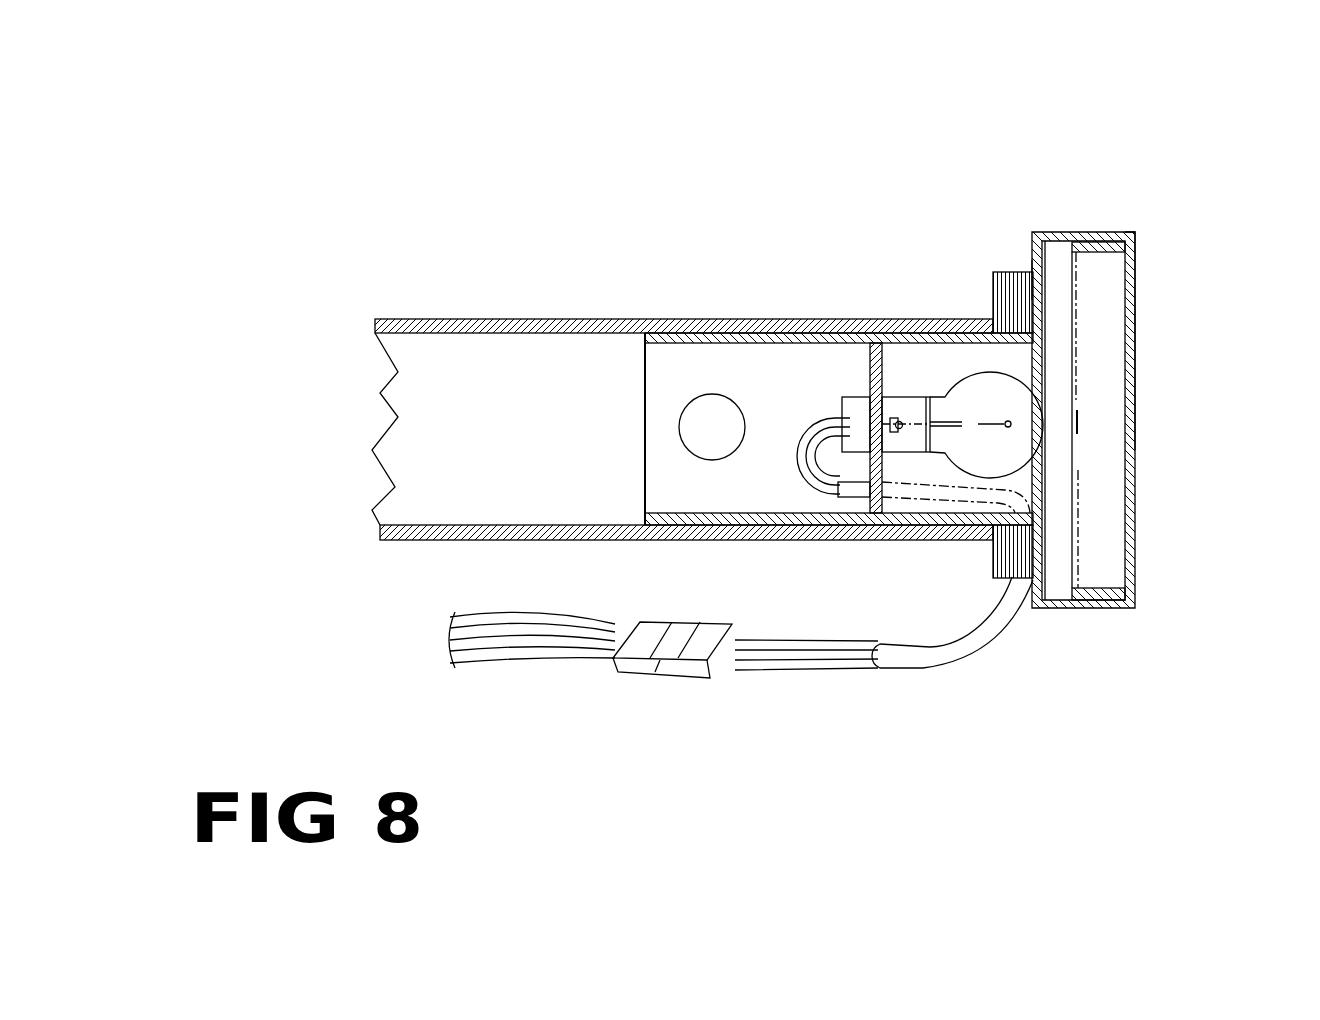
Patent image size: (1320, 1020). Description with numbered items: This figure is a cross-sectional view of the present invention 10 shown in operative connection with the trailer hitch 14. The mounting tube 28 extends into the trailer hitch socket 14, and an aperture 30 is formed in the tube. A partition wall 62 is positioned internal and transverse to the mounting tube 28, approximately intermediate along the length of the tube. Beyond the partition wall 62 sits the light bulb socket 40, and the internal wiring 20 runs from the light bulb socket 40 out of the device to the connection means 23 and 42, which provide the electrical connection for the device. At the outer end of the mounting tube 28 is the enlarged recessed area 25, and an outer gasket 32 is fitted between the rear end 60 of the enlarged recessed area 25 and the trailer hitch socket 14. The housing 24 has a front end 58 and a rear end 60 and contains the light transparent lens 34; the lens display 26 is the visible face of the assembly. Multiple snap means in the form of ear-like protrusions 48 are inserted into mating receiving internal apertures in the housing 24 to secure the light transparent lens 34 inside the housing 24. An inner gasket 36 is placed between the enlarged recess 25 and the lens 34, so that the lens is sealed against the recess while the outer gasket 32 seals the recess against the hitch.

The present invention 10 is at (1182, 125).
The trailer hitch 14 is at (418, 320).
The internal wiring 20 is at (927, 498).
The connection means 23 is at (678, 678).
The housing 24 is at (1078, 608).
The enlarged recessed area 25 is at (1036, 268).
The lens display 26 is at (1137, 400).
The mounting tube 28 is at (755, 320).
The aperture 30 is at (700, 427).
The outer gasket 32 is at (1002, 272).
The light transparent lens 34 is at (1135, 278).
The inner gasket 36 is at (1046, 300).
The light bulb socket 40 is at (842, 400).
The connection means 42 is at (645, 675).
The ear-like protrusions 48 is at (1110, 597).
The front end 58 is at (1138, 234).
The rear end 60 is at (1036, 278).
The partition wall 62 is at (882, 367).